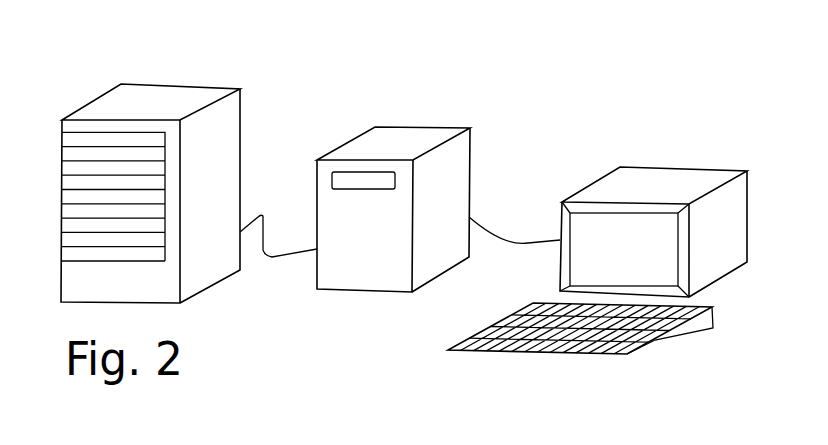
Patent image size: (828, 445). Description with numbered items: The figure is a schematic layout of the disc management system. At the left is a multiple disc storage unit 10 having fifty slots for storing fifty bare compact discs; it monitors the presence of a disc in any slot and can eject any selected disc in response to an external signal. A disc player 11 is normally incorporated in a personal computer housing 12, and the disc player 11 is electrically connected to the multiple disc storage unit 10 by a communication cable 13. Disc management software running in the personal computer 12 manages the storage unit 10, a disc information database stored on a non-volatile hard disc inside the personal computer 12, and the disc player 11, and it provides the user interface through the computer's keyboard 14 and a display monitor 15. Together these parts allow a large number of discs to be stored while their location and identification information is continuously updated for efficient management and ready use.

The multiple disc storage unit 10 is at (172, 83).
The disc player 11 is at (350, 175).
The personal computer housing 12 is at (418, 125).
The communication cable 13 is at (272, 259).
The keyboard 14 is at (648, 335).
The display monitor 15 is at (667, 168).